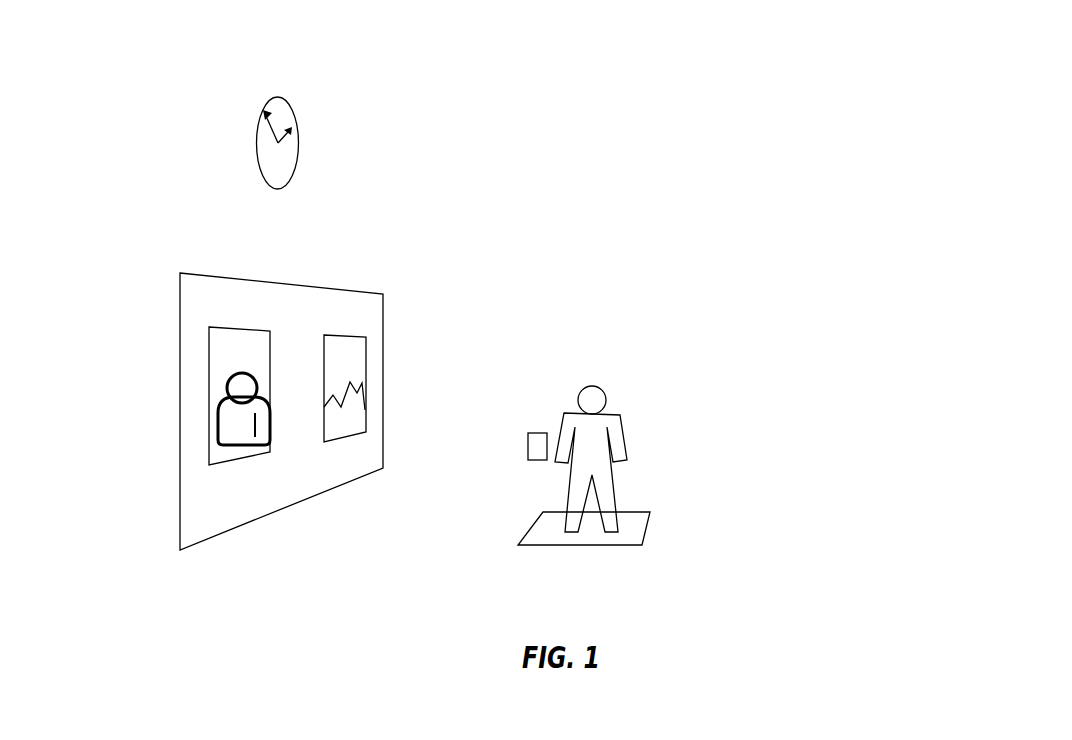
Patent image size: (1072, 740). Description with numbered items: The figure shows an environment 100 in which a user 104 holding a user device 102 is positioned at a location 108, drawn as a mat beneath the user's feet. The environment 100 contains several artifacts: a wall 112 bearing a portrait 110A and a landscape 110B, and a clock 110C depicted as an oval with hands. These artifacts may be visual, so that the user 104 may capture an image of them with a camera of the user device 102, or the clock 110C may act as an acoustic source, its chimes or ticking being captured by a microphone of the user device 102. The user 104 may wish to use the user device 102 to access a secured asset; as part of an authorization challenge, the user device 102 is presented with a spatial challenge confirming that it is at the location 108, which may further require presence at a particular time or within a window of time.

The environment 100 is at (929, 221).
The user device 102 is at (535, 458).
The user 104 is at (612, 422).
The location 108 is at (647, 530).
The portrait 110A is at (253, 343).
The landscape 110B is at (343, 345).
The clock 110C is at (277, 98).
The wall 112 is at (380, 313).